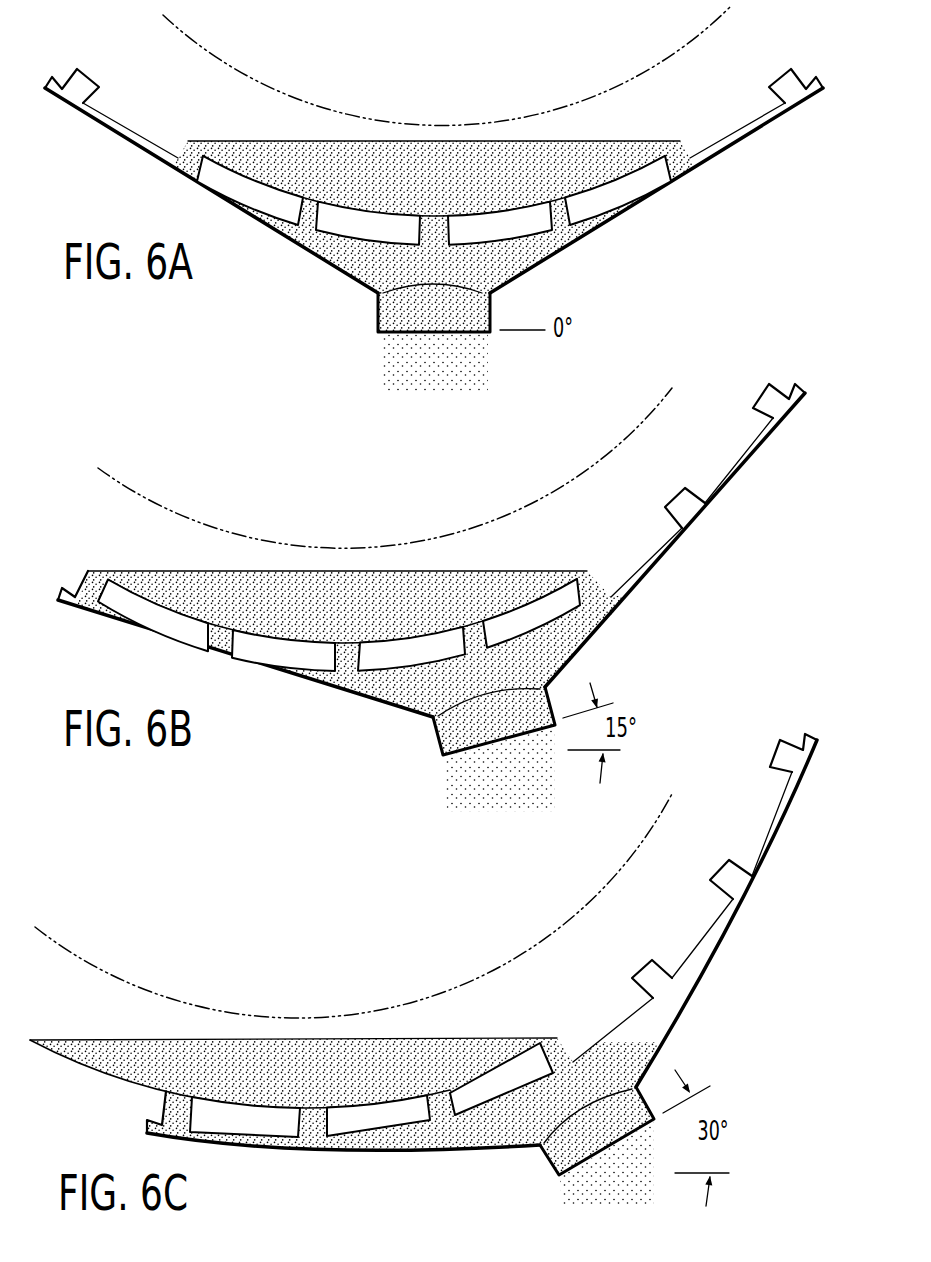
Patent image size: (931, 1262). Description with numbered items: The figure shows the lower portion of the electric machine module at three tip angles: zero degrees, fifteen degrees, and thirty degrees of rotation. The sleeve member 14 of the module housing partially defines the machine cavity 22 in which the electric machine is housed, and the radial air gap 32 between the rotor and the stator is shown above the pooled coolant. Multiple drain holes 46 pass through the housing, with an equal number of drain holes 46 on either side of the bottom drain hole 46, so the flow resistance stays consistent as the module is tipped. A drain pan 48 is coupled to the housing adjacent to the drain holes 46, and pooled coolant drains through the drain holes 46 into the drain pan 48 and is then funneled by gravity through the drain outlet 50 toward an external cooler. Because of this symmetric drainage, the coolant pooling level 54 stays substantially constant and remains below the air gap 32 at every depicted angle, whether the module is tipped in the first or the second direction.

In FIG. 6A, the sleeve member 14 is at (225, 183).
In FIG. 6B, the sleeve member 14 is at (148, 618).
In FIG. 6C, the sleeve member 14 is at (291, 1088).
In FIG. 6A, the machine cavity 22 is at (742, 42).
In FIG. 6B, the machine cavity 22 is at (703, 418).
In FIG. 6C, the machine cavity 22 is at (712, 797).
In FIG. 6A, the radial air gap 32 is at (587, 99).
In FIG. 6B, the radial air gap 32 is at (538, 496).
In FIG. 6C, the radial air gap 32 is at (437, 992).
In FIG. 6B, the drain holes 46 is at (593, 590).
In FIG. 6C, the drain holes 46 is at (740, 872).
In FIG. 6A, the drain pan 48 is at (777, 113).
In FIG. 6B, the drain pan 48 is at (690, 528).
In FIG. 6C, the drain pan 48 is at (700, 975).
In FIG. 6A, the drain outlet 50 is at (377, 313).
In FIG. 6B, the drain outlet 50 is at (436, 738).
In FIG. 6C, the drain outlet 50 is at (550, 1160).
In FIG. 6A, the coolant pooling level 54 is at (617, 140).
In FIG. 6B, the coolant pooling level 54 is at (548, 569).
In FIG. 6C, the coolant pooling level 54 is at (520, 1038).